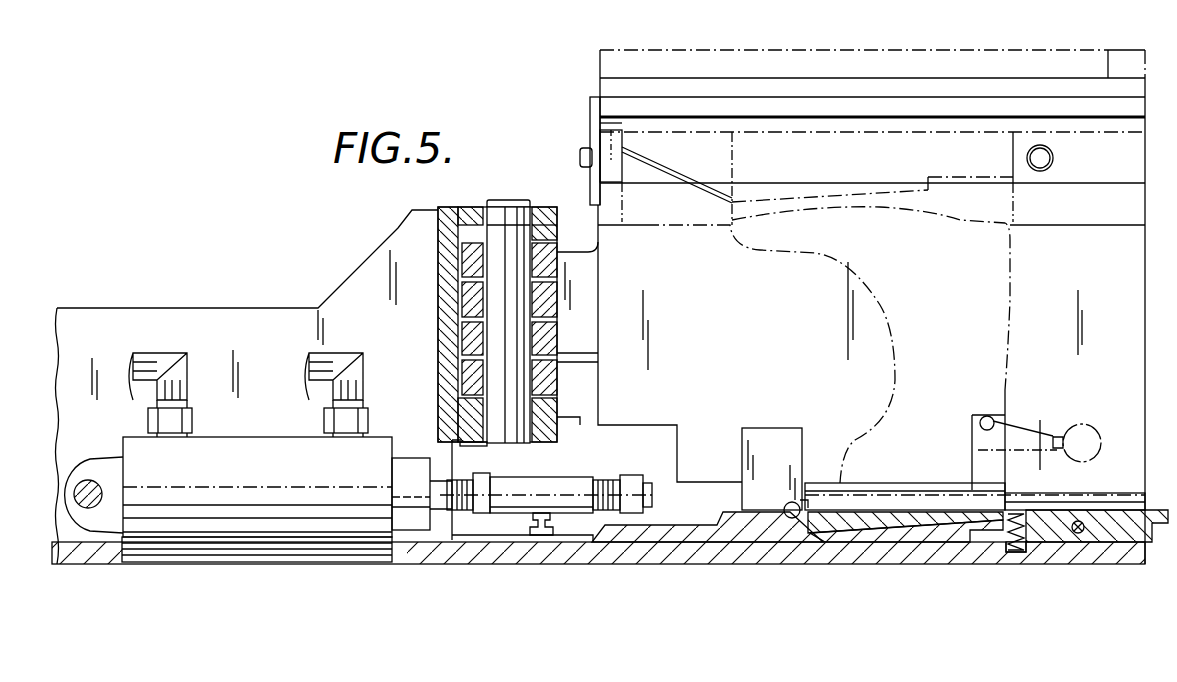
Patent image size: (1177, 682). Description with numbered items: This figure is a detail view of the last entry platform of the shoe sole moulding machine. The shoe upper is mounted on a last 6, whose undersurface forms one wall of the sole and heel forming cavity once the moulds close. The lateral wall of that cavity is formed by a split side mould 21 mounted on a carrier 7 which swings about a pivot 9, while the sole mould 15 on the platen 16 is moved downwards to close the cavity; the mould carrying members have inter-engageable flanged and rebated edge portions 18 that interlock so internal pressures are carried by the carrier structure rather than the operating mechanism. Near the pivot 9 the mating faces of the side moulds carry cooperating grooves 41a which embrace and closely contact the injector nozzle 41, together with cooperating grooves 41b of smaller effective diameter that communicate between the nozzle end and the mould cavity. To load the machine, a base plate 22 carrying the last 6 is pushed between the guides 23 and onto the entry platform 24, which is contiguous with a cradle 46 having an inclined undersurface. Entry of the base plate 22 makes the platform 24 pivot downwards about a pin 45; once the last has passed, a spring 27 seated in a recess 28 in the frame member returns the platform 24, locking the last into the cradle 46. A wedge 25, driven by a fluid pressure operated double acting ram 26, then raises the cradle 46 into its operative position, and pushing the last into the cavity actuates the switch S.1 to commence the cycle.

The platen 16 is at (943, 49).
The flanged and rebated edge portions 18 is at (1110, 120).
The cooperating grooves 41a is at (598, 124).
The injector nozzle 41 is at (580, 156).
The cooperating grooves of smaller effective diameter 41b is at (636, 160).
The sole mould 15 is at (843, 171).
The pivot 9 is at (508, 256).
The carrier 7 is at (748, 314).
The split side mould 21 is at (1085, 226).
The last 6 is at (1012, 312).
The base plate 22 is at (905, 486).
The guides 23 is at (1085, 494).
The wedge 25 is at (737, 527).
The switch S.1 is at (790, 518).
The cradle 46 is at (905, 525).
The recess 28 is at (1000, 530).
The spring 27 is at (1018, 548).
The pin 45 is at (1077, 534).
The entry platform 24 is at (1115, 542).
The fluid pressure operated double acting ram 26 is at (312, 527).